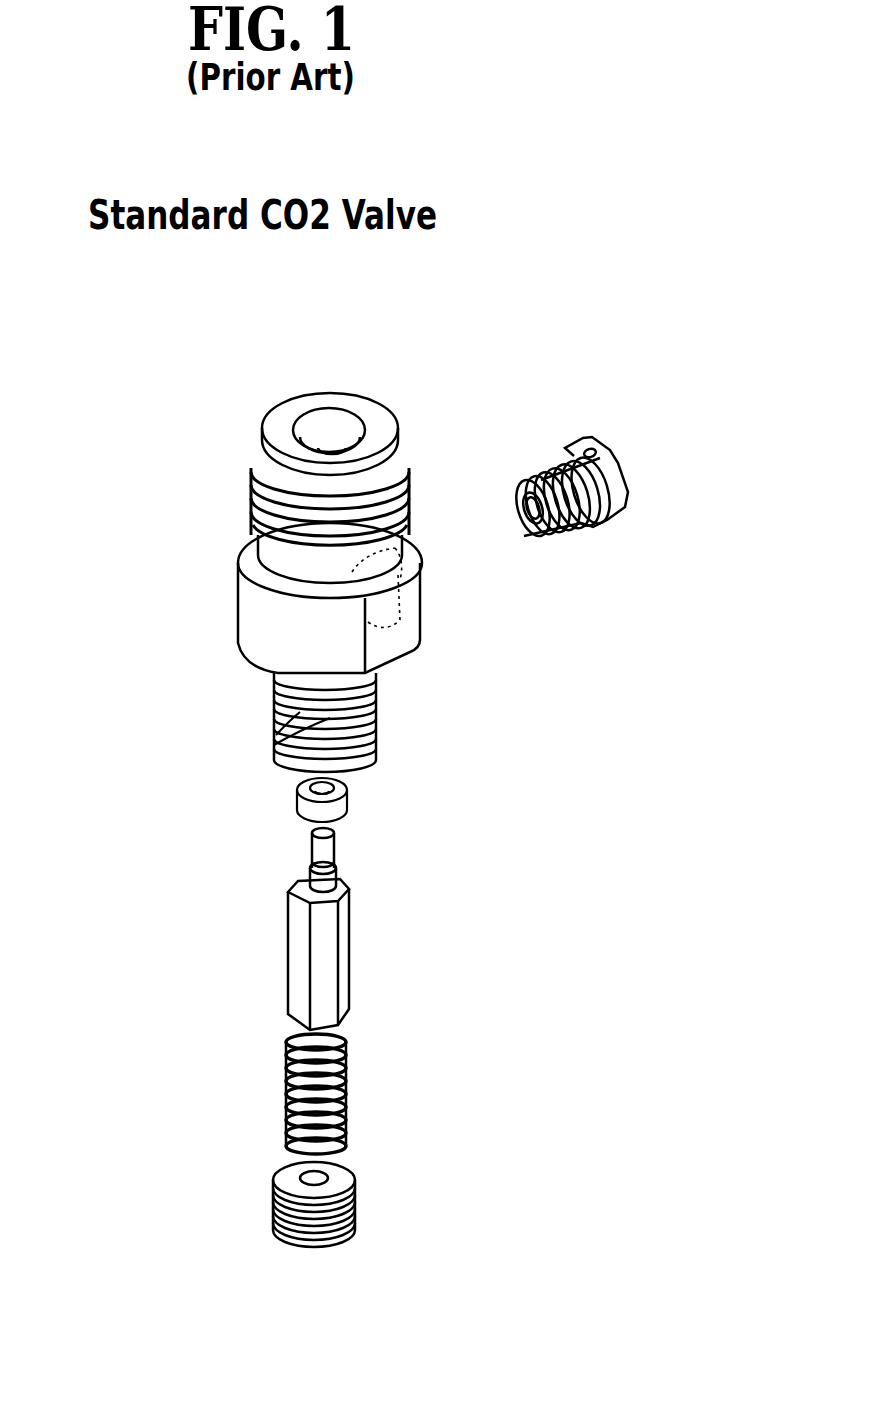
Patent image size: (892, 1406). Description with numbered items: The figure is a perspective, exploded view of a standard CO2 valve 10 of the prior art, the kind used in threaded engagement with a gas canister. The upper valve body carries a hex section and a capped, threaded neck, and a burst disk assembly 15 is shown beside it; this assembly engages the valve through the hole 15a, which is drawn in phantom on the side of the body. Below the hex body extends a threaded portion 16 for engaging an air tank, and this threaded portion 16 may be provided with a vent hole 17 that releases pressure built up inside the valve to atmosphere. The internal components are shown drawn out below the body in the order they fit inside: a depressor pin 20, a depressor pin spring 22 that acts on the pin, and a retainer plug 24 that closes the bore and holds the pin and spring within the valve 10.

The standard valve 10 is at (210, 457).
The burst disk assembly 15 is at (642, 495).
The hole 15a is at (400, 605).
The threaded portion 16 is at (376, 732).
The vent hole 17 is at (276, 748).
The depressor pin 20 is at (272, 954).
The depressor pin spring 22 is at (266, 1104).
The retainer plug 24 is at (262, 1224).